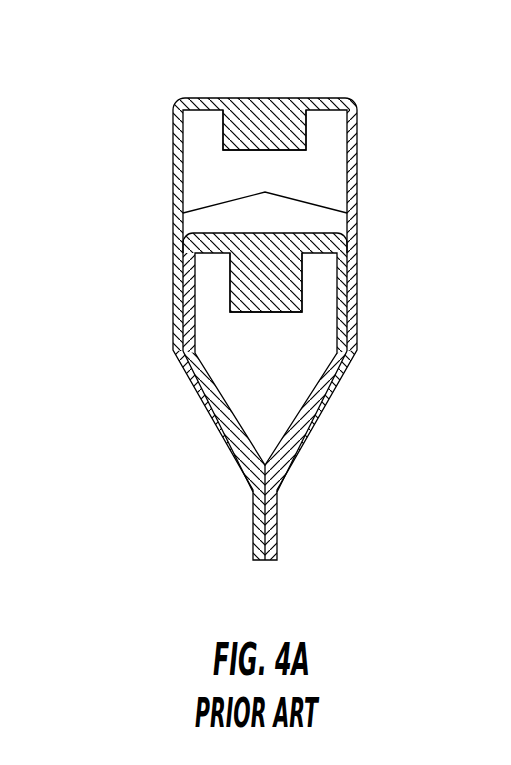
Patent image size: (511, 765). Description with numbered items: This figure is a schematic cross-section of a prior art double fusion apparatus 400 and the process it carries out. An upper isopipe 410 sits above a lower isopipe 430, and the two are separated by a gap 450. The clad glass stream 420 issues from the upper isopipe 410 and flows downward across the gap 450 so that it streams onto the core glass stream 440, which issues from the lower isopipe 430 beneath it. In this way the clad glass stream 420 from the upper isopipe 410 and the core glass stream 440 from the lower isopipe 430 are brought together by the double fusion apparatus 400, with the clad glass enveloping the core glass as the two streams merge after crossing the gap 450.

The double fusion apparatus 400 is at (380, 84).
The upper isopipe 410 is at (335, 165).
The clad glass stream 420 is at (263, 110).
The lower isopipe 430 is at (320, 313).
The core glass stream 440 is at (290, 252).
The gap 450 is at (160, 205).